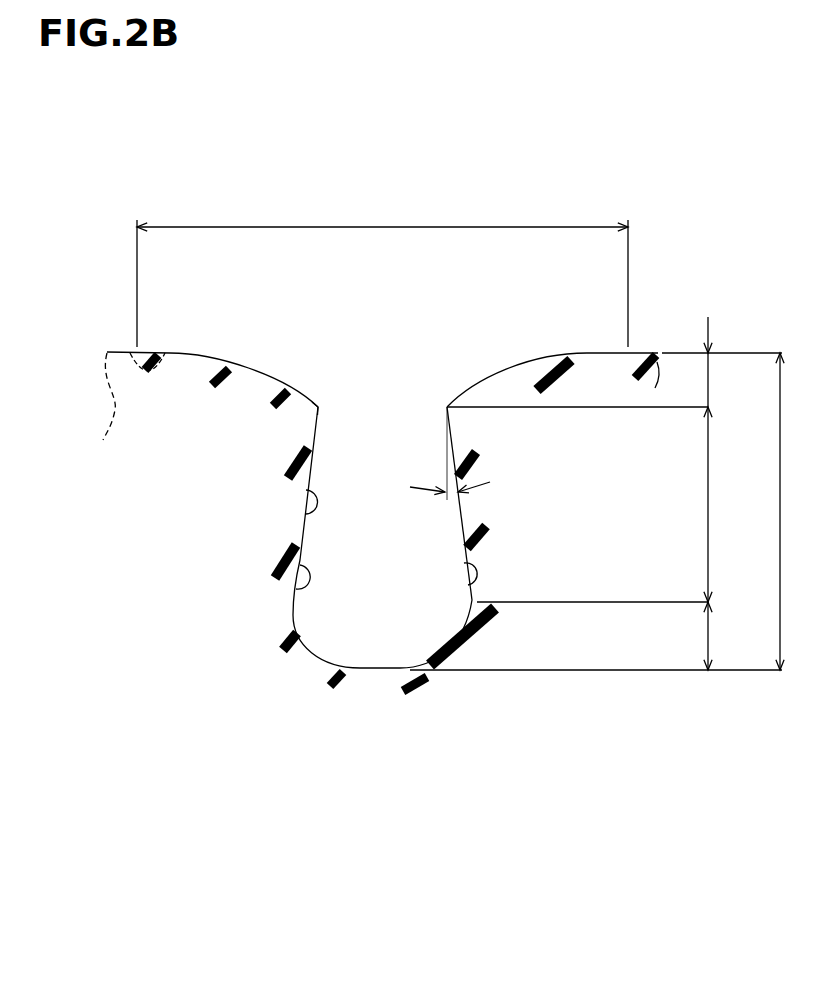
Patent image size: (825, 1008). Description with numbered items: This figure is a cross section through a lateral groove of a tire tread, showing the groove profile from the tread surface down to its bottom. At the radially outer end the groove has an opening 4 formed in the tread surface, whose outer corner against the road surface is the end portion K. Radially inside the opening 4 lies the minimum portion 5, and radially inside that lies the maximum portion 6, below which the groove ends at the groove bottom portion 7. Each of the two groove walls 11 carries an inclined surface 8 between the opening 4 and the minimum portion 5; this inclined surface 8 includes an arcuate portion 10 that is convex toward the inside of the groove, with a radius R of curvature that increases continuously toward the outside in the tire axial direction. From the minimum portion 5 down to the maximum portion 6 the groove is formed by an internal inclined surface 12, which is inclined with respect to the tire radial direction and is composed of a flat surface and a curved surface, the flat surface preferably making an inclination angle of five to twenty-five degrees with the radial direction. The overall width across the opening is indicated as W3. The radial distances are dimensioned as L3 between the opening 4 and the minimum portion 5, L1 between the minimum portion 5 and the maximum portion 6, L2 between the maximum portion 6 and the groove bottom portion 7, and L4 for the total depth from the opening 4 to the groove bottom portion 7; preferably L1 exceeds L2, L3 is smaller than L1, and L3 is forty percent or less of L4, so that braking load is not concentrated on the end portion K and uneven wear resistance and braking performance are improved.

The opening 4 is at (262, 368).
The minimum portion 5 is at (325, 402).
The maximum portion 6 is at (297, 600).
The groove bottom portion 7 is at (383, 655).
The inclined surface 8 is at (205, 353).
The arcuate portion 10 is at (250, 377).
The groove walls 11 is at (293, 597).
The internal inclined surface 12 is at (303, 518).
The radius of curvature R is at (267, 380).
The end portion K is at (130, 412).
The groove width W3 is at (382, 271).
The minimum distance between minimum portion and maximum portion L1 is at (599, 504).
The minimum distance between maximum portion and groove bottom portion L2 is at (596, 636).
The minimum distance between opening and minimum portion L3 is at (722, 362).
The minimum distance between opening and groove bottom portion L4 is at (800, 511).